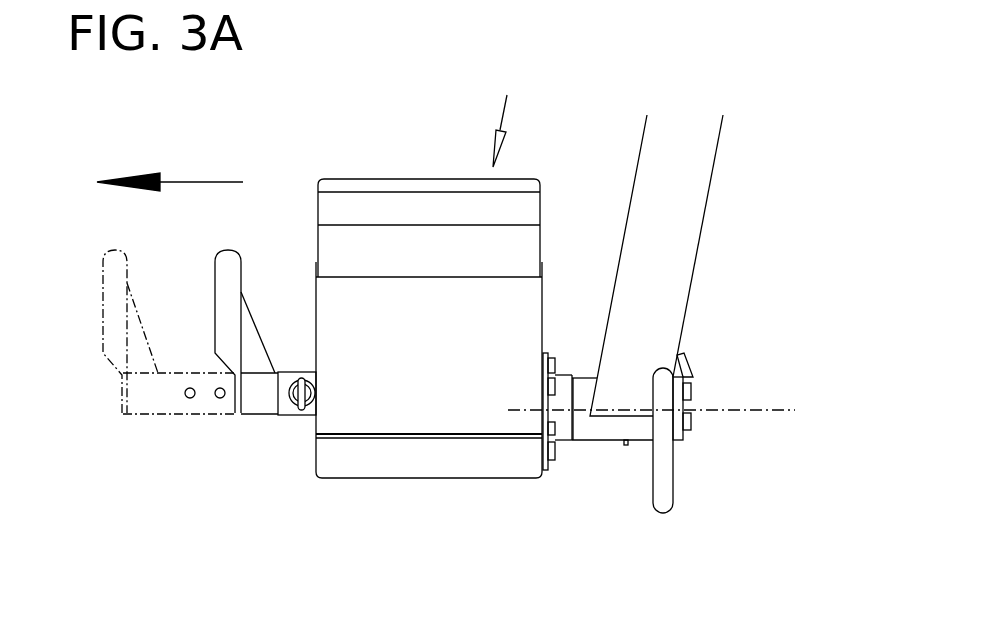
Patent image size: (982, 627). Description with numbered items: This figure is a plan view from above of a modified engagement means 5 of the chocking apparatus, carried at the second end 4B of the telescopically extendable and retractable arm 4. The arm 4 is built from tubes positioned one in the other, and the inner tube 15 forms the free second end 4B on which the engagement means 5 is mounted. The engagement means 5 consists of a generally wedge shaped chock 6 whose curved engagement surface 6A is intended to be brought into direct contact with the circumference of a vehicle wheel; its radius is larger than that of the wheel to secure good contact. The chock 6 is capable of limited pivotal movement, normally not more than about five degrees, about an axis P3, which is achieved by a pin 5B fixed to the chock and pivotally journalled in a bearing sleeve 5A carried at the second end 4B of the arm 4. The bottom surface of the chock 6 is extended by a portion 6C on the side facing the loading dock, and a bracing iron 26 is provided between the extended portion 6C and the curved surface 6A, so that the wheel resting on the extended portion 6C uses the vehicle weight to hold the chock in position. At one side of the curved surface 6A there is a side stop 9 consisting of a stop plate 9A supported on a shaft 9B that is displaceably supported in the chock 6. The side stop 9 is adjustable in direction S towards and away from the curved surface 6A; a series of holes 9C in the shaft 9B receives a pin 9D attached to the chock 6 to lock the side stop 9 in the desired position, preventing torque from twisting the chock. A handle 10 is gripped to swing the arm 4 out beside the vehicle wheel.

The adjustment direction S is at (170, 156).
The stop plate 9A is at (228, 302).
The side stop 9 is at (218, 443).
The holes 9C is at (187, 397).
The shaft 9B is at (265, 398).
The pin 9D is at (305, 410).
The extended portion 6C is at (437, 213).
The bracing iron 26 is at (375, 250).
The engagement means 5 is at (505, 107).
The chock 6 is at (383, 480).
The curved engagement surface 6A is at (463, 370).
The pin 5B is at (562, 393).
The bearing sleeve 5A is at (583, 385).
The second end of the arm 4B is at (628, 393).
The arm 4 is at (722, 271).
The second inner tube 15 is at (713, 173).
The handle 10 is at (658, 492).
The pivot axis P3 is at (773, 412).